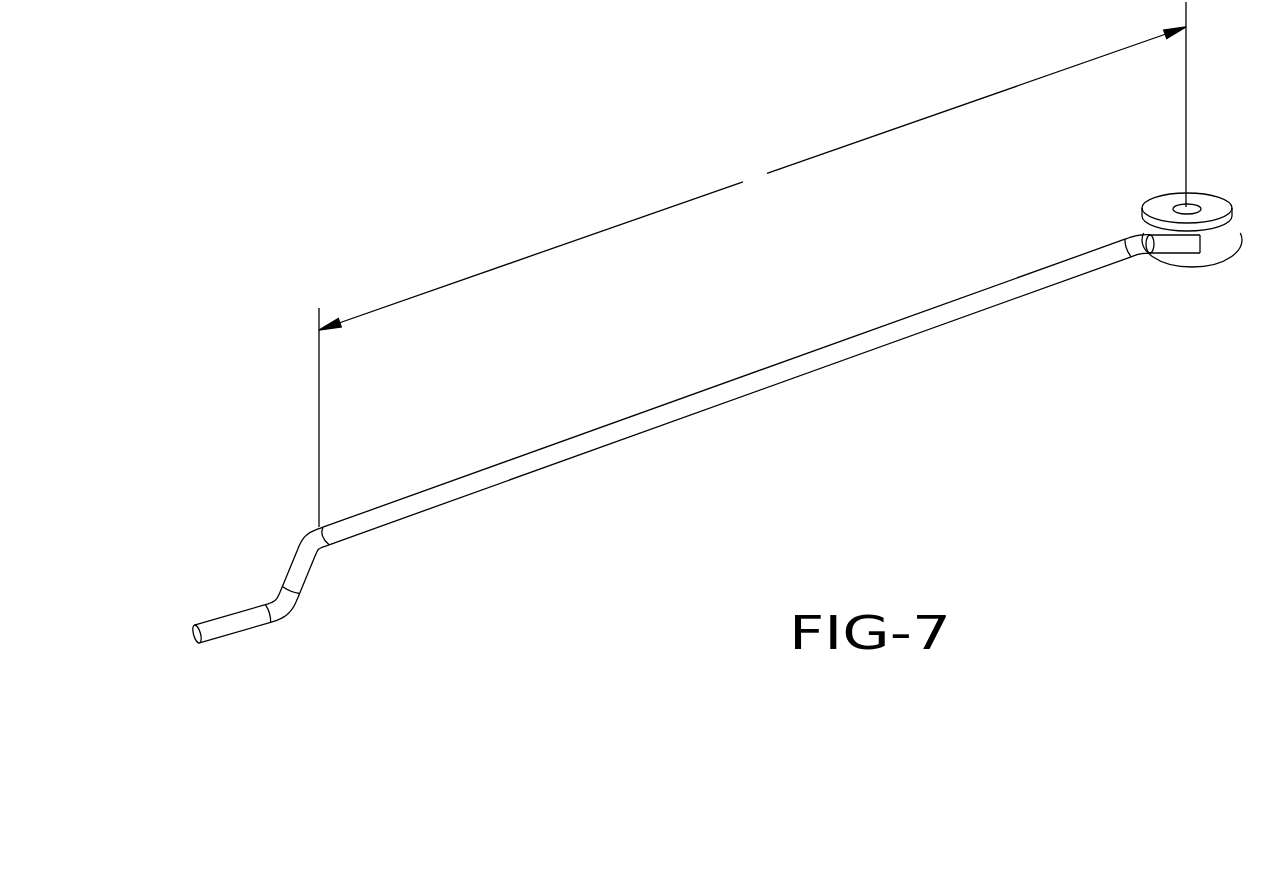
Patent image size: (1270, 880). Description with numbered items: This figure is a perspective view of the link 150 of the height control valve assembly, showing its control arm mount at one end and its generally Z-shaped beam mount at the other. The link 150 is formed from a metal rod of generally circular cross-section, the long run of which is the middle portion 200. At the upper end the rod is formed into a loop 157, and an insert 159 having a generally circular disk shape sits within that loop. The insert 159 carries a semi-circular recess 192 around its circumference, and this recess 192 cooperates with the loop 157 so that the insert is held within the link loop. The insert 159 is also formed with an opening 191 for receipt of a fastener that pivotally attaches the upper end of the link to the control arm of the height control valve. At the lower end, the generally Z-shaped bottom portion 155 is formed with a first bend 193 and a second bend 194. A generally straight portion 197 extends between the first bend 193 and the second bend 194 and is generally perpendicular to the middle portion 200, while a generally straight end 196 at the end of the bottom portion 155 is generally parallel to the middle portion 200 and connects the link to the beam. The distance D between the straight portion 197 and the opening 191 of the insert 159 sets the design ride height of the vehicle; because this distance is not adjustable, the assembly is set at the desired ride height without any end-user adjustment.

The link 150 is at (663, 430).
The generally Z-shaped bottom portion 155 is at (297, 608).
The loop 157 is at (1213, 243).
The insert 159 is at (1218, 202).
The opening 191 is at (1182, 207).
The semi-circular recess 192 is at (1155, 233).
The first bend 193 is at (298, 542).
The second bend 194 is at (275, 613).
The generally straight end 196 is at (195, 635).
The generally straight portion 197 is at (282, 585).
The middle portion 200 is at (932, 330).
The distance D is at (752, 264).